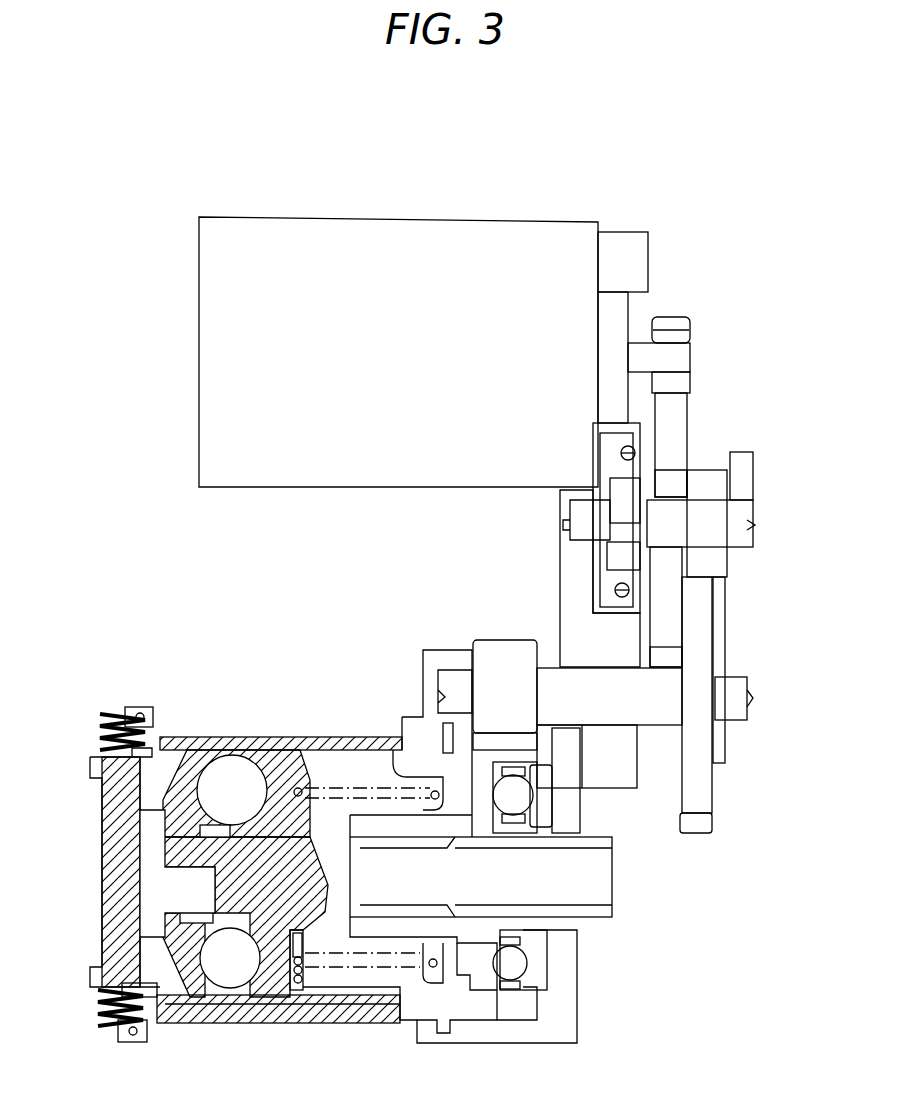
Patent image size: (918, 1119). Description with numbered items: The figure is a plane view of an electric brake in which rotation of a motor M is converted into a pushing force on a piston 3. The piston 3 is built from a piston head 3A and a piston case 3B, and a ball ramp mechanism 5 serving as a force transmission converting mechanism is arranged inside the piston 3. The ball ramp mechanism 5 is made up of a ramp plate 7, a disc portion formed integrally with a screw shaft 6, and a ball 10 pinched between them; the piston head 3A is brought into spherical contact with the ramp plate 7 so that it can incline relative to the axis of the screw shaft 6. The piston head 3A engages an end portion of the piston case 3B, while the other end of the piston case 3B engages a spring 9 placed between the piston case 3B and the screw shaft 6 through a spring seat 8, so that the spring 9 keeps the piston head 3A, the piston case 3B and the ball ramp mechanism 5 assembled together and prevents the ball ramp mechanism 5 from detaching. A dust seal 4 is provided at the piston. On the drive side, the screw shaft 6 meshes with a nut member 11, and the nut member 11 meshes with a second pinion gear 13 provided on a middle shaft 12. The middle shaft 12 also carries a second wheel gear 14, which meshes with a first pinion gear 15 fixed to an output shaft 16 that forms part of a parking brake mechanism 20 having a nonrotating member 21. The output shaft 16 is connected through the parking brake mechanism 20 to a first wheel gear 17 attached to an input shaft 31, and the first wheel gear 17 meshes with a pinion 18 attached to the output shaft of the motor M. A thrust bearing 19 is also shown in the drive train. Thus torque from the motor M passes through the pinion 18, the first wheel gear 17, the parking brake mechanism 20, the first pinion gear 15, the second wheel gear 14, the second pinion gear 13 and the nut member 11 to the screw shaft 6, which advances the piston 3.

The motor M is at (308, 212).
The piston 3 is at (82, 742).
The piston head 3A is at (108, 922).
The piston case 3B is at (247, 1020).
The dust seal 4 is at (97, 1016).
The ball ramp mechanism 5 is at (290, 760).
The screw shaft 6 is at (585, 893).
The ramp plate 7 is at (177, 823).
The spring seat 8 is at (427, 987).
The spring 9 is at (303, 962).
The ball 10 is at (232, 778).
The nut member 11 is at (485, 990).
The middle shaft 12 is at (548, 670).
The second pinion gear 13 is at (487, 668).
The second wheel gear 14 is at (703, 790).
The first pinion gear 15 is at (705, 500).
The output shaft 16 is at (665, 535).
The first wheel gear 17 is at (672, 419).
The pinion 18 is at (683, 337).
The thrust bearing 19 is at (518, 962).
The parking brake mechanism 20 is at (576, 460).
The nonrotating member 21 is at (577, 565).
The input shaft 31 is at (668, 488).